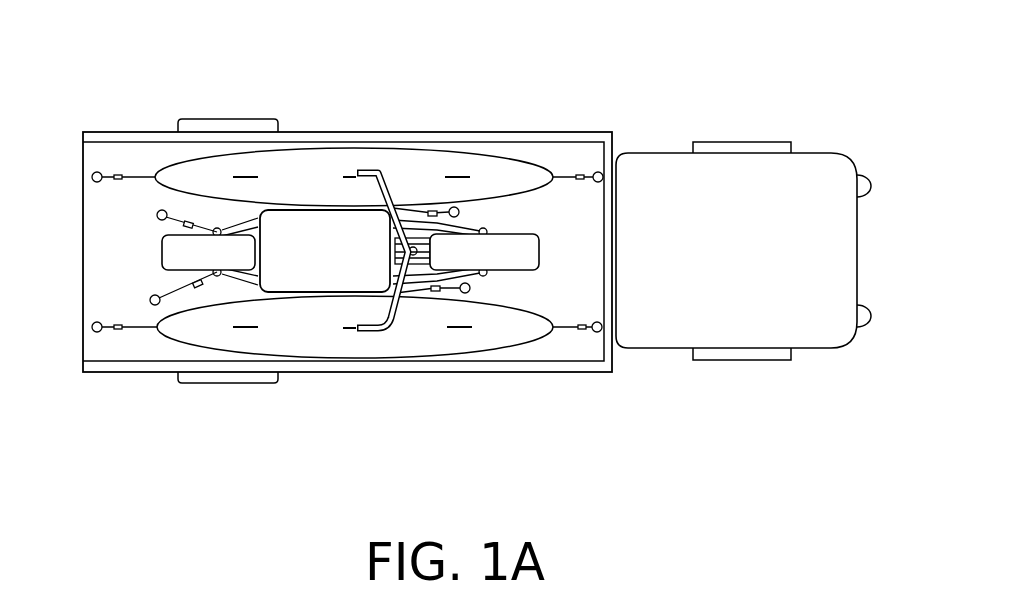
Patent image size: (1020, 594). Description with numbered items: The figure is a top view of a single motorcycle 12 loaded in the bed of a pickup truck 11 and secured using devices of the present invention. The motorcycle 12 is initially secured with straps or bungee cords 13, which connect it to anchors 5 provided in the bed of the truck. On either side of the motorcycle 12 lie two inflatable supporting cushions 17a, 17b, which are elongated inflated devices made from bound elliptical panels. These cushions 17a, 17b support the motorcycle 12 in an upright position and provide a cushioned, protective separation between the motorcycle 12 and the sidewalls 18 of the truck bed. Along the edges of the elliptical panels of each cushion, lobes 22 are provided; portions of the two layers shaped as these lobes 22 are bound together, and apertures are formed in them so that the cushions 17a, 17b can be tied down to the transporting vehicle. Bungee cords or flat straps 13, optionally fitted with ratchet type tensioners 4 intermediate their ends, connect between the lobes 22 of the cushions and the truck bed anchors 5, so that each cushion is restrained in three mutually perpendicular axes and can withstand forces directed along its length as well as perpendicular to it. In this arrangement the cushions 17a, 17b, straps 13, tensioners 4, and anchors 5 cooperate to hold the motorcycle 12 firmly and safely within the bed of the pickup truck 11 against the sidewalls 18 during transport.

The ratchet type tensioners 4 is at (440, 296).
The anchors 5 is at (92, 178).
The pickup truck 11 is at (795, 87).
The motorcycle 12 is at (306, 264).
The straps or bungee cords 13 is at (117, 172).
The inflatable supporting cushion 17a is at (314, 190).
The inflatable supporting cushion 17b is at (328, 341).
The sidewall 18 is at (500, 137).
The lobes 22 is at (146, 175).